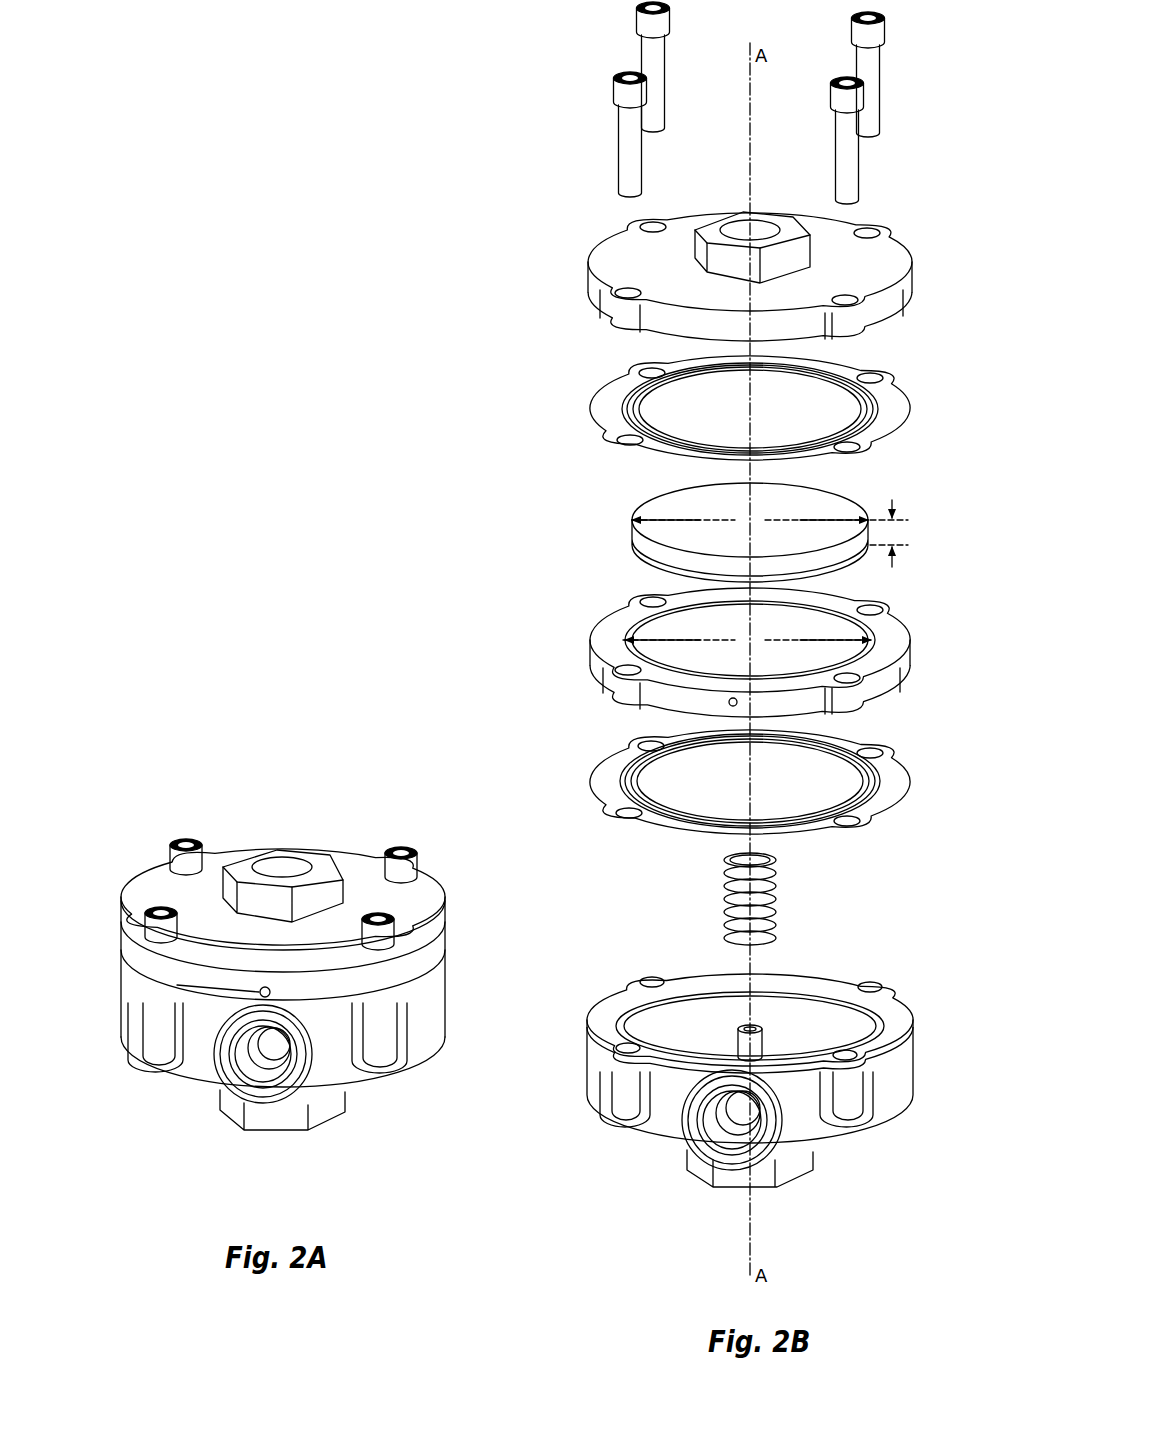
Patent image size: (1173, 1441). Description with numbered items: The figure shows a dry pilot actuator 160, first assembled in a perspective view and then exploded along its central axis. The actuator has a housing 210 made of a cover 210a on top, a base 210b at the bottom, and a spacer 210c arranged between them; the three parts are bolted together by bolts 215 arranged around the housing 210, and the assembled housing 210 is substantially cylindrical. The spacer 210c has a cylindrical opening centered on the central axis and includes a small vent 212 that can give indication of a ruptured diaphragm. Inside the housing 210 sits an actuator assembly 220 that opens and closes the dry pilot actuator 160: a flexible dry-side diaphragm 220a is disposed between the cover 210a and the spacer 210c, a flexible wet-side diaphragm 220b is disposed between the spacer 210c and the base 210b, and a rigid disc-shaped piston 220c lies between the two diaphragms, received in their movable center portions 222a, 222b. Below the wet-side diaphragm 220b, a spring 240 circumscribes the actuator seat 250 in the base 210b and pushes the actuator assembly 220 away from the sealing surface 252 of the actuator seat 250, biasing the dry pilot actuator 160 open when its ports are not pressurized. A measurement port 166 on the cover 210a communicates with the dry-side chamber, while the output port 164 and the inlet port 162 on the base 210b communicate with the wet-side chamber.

In FIG. 2A, the dry pilot actuator 160 is at (93, 915).
In FIG. 2B, the dry pilot actuator 160 is at (958, 136).
In FIG. 2A, the inlet port 162 is at (323, 1130).
In FIG. 2B, the inlet port 162 is at (813, 1172).
In FIG. 2A, the output port 164 is at (243, 1103).
In FIG. 2B, the output port 164 is at (690, 1142).
In FIG. 2A, the measurement port 166 is at (318, 862).
In FIG. 2B, the measurement port 166 is at (783, 222).
In FIG. 2A, the housing 210 is at (437, 1062).
In FIG. 2A, the cover 210a is at (445, 921).
In FIG. 2B, the cover 210a is at (590, 270).
In FIG. 2A, the base 210b is at (445, 1001).
In FIG. 2B, the base 210b is at (912, 1046).
In FIG. 2A, the spacer 210c is at (445, 950).
In FIG. 2B, the spacer 210c is at (912, 656).
In FIG. 2A, the vent 212 is at (125, 977).
In FIG. 2B, the vent 212 is at (729, 703).
In FIG. 2B, the bolts 215 is at (648, 152).
In FIG. 2B, the actuator assembly 220 is at (498, 358).
In FIG. 2B, the dry-side diaphragm 220a is at (590, 398).
In FIG. 2B, the wet-side diaphragm 220b is at (590, 790).
In FIG. 2B, the piston 220c is at (632, 507).
In FIG. 2B, the center portion of dry-side diaphragm 222a is at (698, 392).
In FIG. 2B, the center portion of wet-side diaphragm 222b is at (682, 766).
In FIG. 2B, the spring 240 is at (777, 890).
In FIG. 2B, the actuator seat 250 is at (765, 1040).
In FIG. 2B, the sealing surface 252 is at (748, 1026).